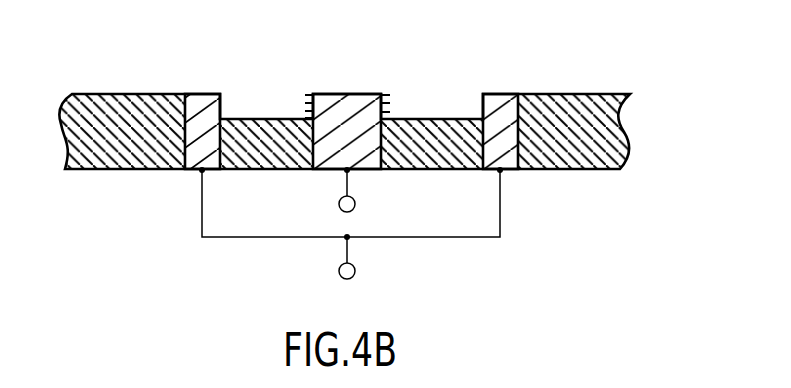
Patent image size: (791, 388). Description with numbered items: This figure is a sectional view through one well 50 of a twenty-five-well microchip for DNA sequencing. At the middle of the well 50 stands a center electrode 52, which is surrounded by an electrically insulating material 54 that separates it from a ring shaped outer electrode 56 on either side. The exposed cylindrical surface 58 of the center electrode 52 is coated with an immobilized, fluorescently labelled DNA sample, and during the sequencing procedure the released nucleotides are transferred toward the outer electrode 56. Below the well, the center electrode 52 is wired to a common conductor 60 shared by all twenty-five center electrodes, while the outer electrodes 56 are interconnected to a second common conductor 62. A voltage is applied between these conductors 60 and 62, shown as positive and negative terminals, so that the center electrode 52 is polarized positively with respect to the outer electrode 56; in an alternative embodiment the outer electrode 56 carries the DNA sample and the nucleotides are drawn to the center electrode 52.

The well 50 is at (636, 201).
The center electrode 52 is at (362, 93).
The electrically insulating material 54 is at (243, 118).
The ring shaped outer electrode 56 is at (507, 94).
The exposed cylindrical surface 58 is at (402, 100).
The common conductor 60 is at (392, 221).
The second common conductor 62 is at (380, 283).